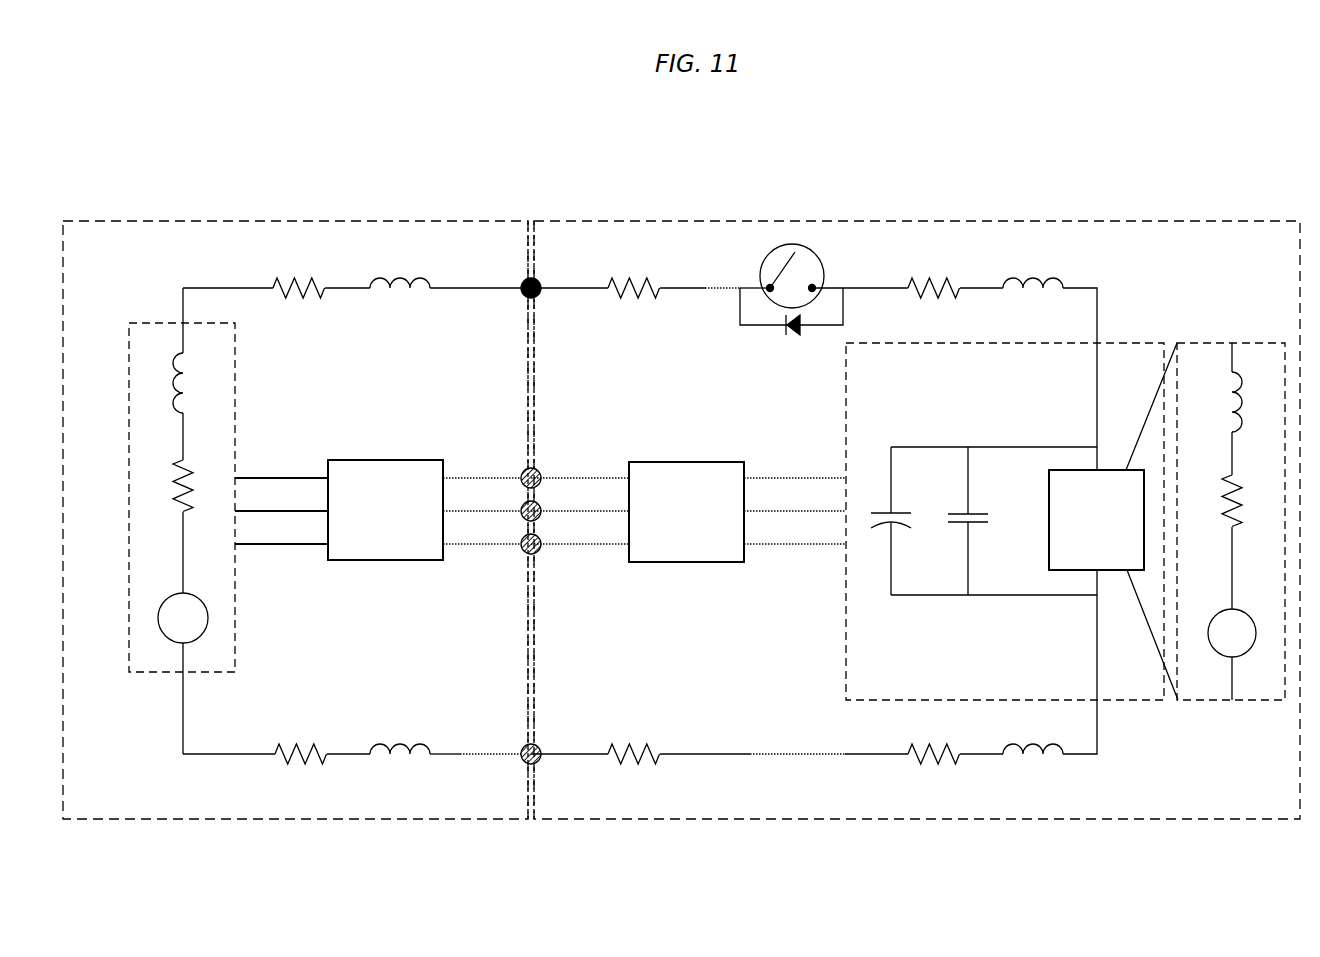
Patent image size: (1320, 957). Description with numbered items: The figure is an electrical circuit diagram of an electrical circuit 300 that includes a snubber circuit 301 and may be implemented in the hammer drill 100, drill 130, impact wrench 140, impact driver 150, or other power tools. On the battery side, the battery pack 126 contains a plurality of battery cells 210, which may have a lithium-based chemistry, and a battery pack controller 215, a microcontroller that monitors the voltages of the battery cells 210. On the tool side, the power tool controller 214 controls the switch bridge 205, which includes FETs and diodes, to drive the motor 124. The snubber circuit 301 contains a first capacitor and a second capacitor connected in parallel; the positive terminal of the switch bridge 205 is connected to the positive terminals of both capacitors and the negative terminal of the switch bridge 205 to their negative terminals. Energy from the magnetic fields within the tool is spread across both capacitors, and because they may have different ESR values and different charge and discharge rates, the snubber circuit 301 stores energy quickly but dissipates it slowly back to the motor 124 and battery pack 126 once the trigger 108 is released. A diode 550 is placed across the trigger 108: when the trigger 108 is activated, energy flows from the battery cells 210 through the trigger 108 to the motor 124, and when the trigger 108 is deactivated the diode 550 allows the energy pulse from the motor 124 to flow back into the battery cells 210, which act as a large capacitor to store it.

The electrical circuit 300 is at (452, 146).
The battery pack 126 is at (248, 221).
The battery cells 210 is at (235, 392).
The battery pack controller 215 is at (385, 460).
The hammer drill 100 is at (914, 486).
The drill 130 is at (914, 486).
The impact wrench 140 is at (914, 486).
The impact driver 150 is at (912, 221).
The trigger 108 is at (796, 250).
The diode 550 is at (765, 328).
The power tool controller 214 is at (687, 462).
The snubber circuit 301 is at (846, 443).
The switch bridge 205 is at (1072, 572).
The motor 124 is at (1231, 343).